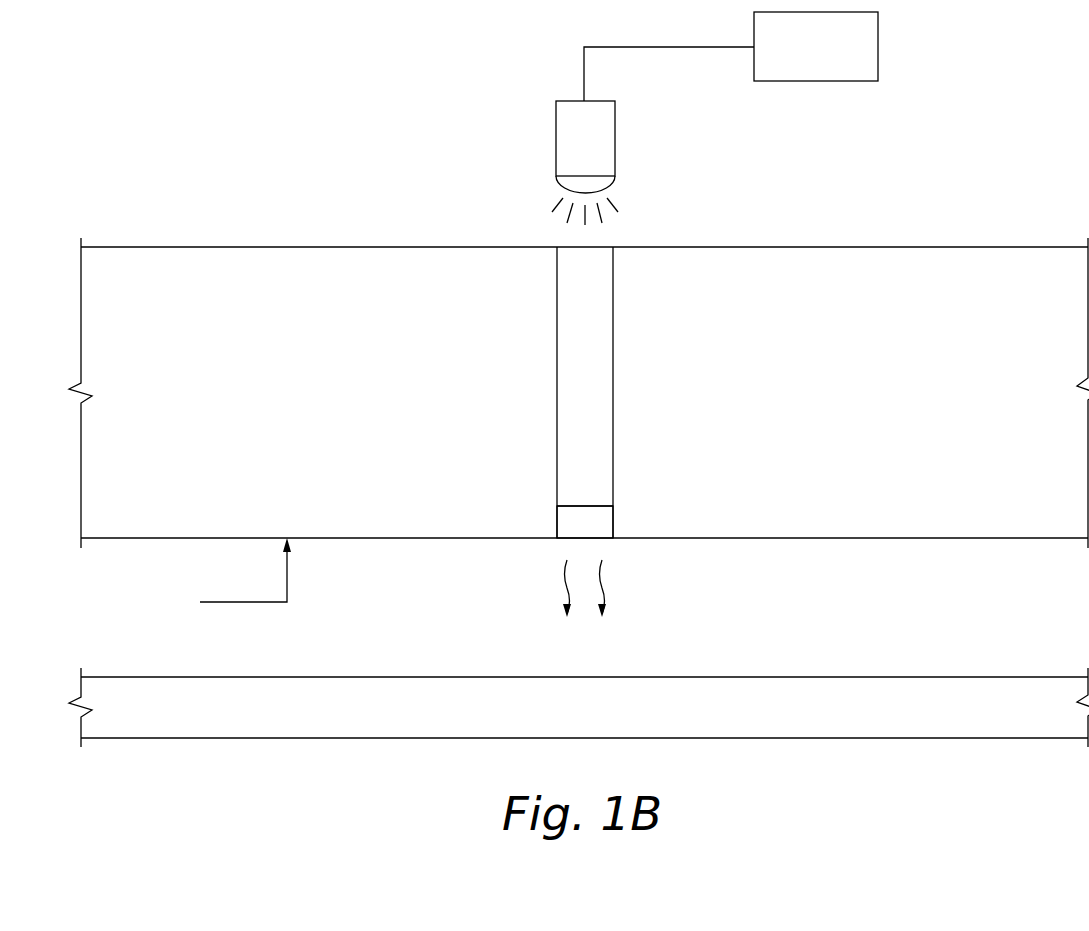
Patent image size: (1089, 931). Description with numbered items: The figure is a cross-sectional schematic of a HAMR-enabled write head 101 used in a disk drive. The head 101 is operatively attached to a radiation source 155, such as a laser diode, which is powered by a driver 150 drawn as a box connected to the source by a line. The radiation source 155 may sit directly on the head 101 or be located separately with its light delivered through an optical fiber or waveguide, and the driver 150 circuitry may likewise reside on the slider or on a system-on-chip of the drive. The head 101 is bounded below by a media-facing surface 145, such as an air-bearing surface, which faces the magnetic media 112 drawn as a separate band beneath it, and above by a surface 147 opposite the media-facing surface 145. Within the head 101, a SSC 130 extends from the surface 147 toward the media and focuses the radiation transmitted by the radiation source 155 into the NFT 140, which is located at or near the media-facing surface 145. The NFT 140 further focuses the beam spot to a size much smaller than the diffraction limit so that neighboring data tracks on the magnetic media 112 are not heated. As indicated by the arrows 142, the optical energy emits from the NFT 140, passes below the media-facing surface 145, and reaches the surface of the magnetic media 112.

The HAMR-enabled write head 101 is at (182, 192).
The magnetic media 112 is at (886, 738).
The SSC 130 is at (557, 284).
The NFT 140 is at (557, 518).
The arrows 142 is at (540, 578).
The media-facing surface 145 is at (290, 578).
The surface 147 is at (848, 247).
The driver 150 is at (878, 32).
The radiation source 155 is at (565, 120).